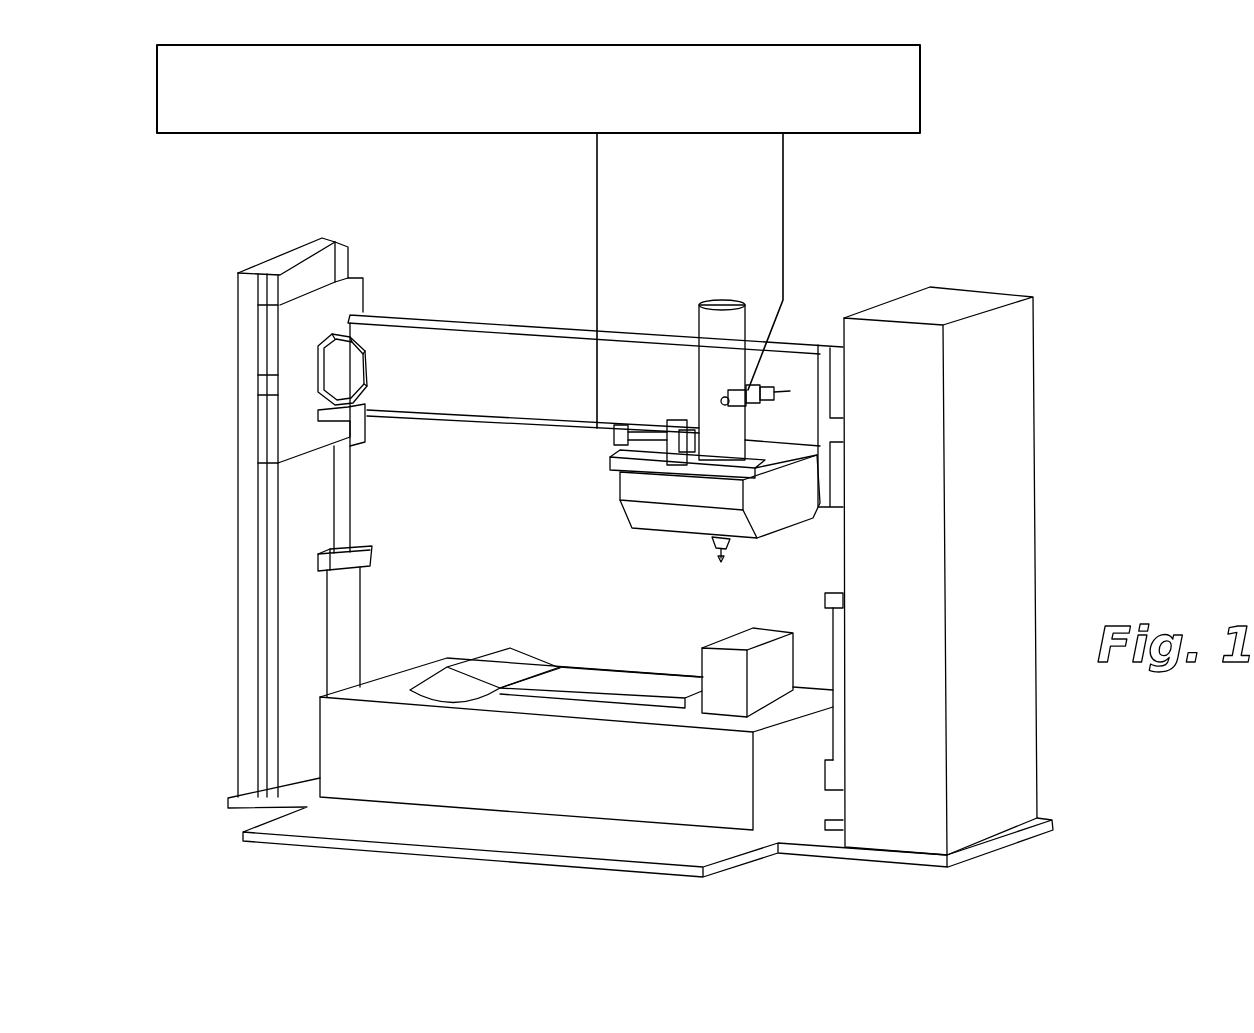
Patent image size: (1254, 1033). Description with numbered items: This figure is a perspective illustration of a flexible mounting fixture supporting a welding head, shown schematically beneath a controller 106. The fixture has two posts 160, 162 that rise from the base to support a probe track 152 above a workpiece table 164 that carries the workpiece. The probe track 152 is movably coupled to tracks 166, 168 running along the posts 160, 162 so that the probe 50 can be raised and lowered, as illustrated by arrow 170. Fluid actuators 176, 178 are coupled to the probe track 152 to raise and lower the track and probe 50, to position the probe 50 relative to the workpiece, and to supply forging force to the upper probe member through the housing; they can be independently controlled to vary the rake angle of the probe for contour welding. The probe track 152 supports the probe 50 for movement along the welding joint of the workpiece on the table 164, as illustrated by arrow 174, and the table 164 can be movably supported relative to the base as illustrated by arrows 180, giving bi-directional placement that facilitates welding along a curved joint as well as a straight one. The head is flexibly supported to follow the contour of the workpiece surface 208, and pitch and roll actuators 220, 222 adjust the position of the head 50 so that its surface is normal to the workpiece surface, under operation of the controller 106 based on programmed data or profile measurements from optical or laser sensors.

The controller 106 is at (190, 136).
The post 160 is at (599, 545).
The track 166 is at (352, 250).
The probe track 152 is at (450, 317).
The pitch actuator 220 is at (675, 417).
The roll actuator 222 is at (773, 358).
The track 168 is at (833, 347).
The post 162 is at (1036, 472).
The arrow 170 is at (370, 511).
The fluid actuator 176 is at (352, 532).
The arrow 174 is at (591, 480).
The probe 50 is at (699, 552).
The fluid actuator 178 is at (832, 628).
The arrows 180 is at (376, 662).
The surface 208 is at (507, 668).
The workpiece table 164 is at (608, 682).